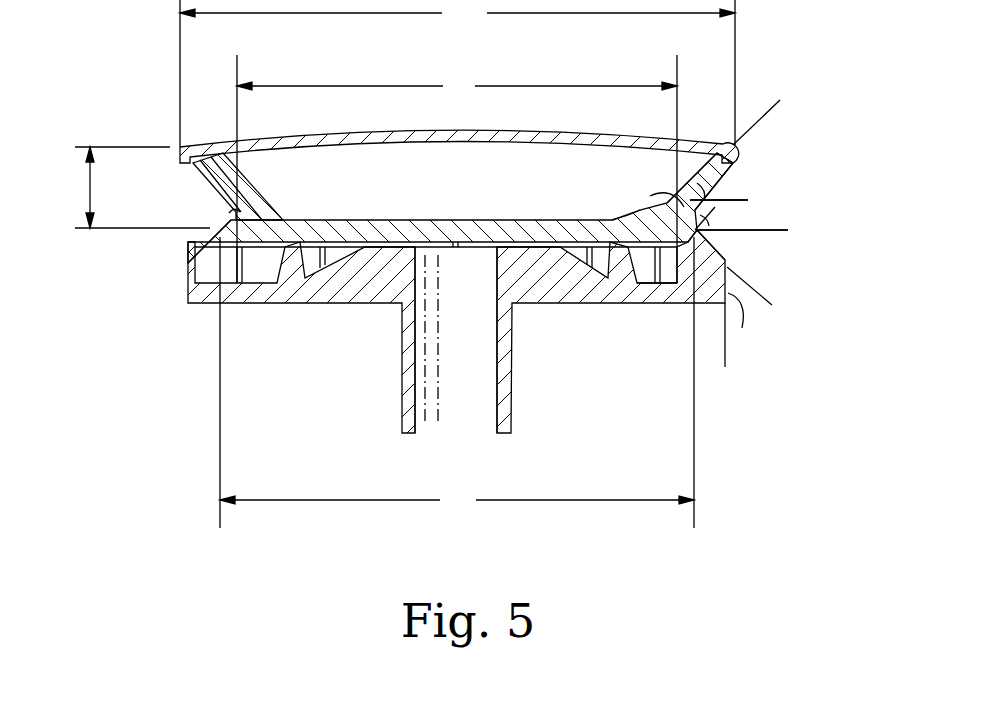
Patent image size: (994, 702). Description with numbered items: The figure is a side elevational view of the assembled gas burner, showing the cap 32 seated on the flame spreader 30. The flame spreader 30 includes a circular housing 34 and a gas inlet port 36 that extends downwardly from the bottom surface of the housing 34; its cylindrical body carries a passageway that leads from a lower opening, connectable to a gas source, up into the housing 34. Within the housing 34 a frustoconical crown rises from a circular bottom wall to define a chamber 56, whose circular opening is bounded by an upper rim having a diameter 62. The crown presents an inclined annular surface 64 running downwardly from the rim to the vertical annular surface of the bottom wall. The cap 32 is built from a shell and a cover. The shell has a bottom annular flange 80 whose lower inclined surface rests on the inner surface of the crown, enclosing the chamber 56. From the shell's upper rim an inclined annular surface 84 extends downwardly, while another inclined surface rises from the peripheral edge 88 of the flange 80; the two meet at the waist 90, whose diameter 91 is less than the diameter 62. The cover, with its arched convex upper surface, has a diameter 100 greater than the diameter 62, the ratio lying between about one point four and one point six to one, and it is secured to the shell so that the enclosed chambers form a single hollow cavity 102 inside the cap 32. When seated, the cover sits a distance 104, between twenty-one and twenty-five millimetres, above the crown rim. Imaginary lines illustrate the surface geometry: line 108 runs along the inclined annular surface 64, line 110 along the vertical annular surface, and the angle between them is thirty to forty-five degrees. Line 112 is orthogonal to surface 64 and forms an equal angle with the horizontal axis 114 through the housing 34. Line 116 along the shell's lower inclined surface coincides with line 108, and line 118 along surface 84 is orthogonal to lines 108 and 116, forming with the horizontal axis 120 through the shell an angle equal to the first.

The flame spreader 30 is at (800, 344).
The cap 32 is at (157, 133).
The circular housing 34 is at (712, 385).
The gas inlet port 36 is at (535, 421).
The chamber 56 is at (647, 284).
The diameter 62 is at (457, 382).
The inclined annular surface 64 is at (698, 247).
The bottom annular flange 80 is at (253, 223).
The inclined annular surface 84 is at (722, 168).
The peripheral edge 88 is at (220, 230).
The waist 90 is at (233, 208).
The diameter 91 is at (457, 169).
The diameter 100 is at (457, 73).
The hollow cavity 102 is at (360, 204).
The distance 104 is at (90, 187).
The imaginary line 108 is at (733, 272).
The imaginary line 110 is at (725, 353).
The imaginary line 112 is at (657, 204).
The horizontal axis 114 is at (778, 221).
The imaginary line 116 is at (633, 221).
The imaginary line 118 is at (783, 106).
The horizontal axis 120 is at (733, 193).